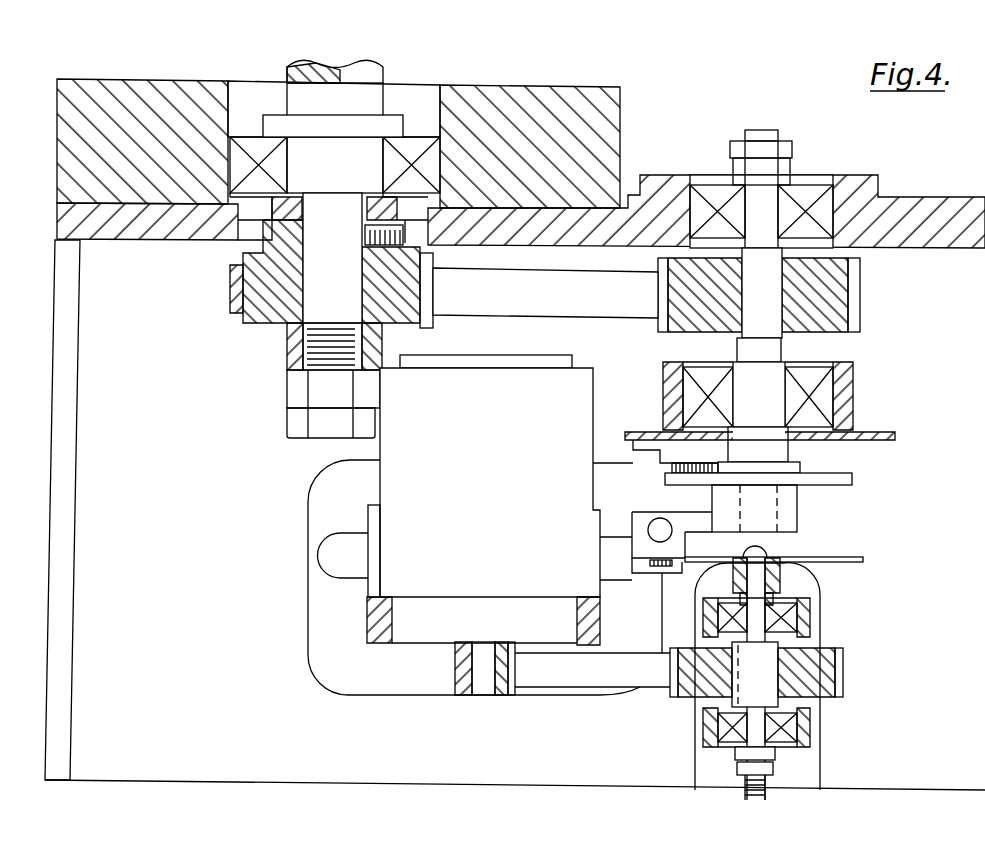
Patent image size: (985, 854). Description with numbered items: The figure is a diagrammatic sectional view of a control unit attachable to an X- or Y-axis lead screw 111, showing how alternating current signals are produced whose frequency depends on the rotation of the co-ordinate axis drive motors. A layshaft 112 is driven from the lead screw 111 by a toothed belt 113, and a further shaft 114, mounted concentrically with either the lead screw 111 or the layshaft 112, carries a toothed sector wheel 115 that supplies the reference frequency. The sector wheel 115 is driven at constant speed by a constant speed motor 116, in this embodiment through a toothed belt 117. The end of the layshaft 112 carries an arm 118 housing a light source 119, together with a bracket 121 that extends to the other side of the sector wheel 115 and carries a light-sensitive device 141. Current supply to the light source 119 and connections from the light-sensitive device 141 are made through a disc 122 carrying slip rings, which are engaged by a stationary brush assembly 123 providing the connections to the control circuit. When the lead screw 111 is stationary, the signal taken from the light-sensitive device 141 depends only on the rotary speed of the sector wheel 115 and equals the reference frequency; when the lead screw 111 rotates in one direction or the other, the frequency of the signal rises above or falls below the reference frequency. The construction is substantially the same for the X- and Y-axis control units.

The lead screw 111 is at (376, 83).
The layshaft 112 is at (777, 318).
The toothed belt 113 is at (633, 318).
The further shaft 114 is at (768, 660).
The sector wheel 115 is at (855, 557).
The constant speed motor 116 is at (585, 415).
The toothed belt 117 is at (651, 683).
The arm 118 is at (727, 522).
The light source 119 is at (665, 521).
The bracket 121 is at (650, 572).
The disc 122 is at (852, 480).
The stationary brush assembly 123 is at (645, 440).
The light-sensitive device 141 is at (674, 568).